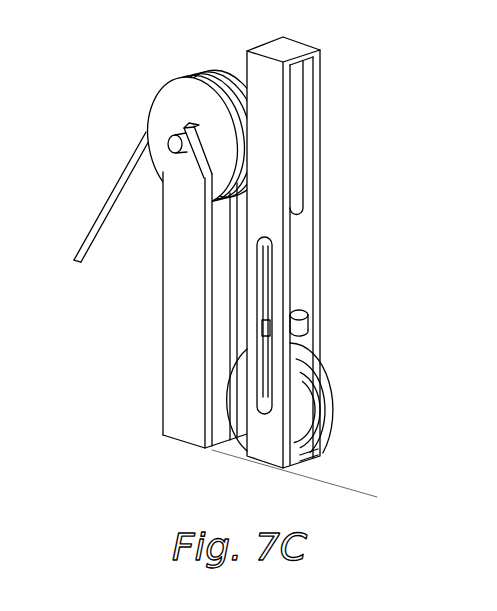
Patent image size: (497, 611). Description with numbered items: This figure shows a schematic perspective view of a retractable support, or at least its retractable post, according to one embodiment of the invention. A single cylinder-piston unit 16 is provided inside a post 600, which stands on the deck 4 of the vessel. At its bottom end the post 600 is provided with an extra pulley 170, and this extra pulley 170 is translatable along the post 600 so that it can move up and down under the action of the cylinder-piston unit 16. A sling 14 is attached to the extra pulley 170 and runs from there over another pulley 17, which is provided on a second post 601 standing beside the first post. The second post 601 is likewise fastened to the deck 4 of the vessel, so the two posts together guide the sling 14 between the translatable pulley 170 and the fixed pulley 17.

The sling 14 is at (100, 222).
The pulley 17 is at (168, 108).
The second post 601 is at (184, 310).
The post 600 is at (319, 98).
The cylinder-piston unit 16 is at (300, 160).
The extra pulley 170 is at (333, 408).
The deck 4 is at (192, 500).